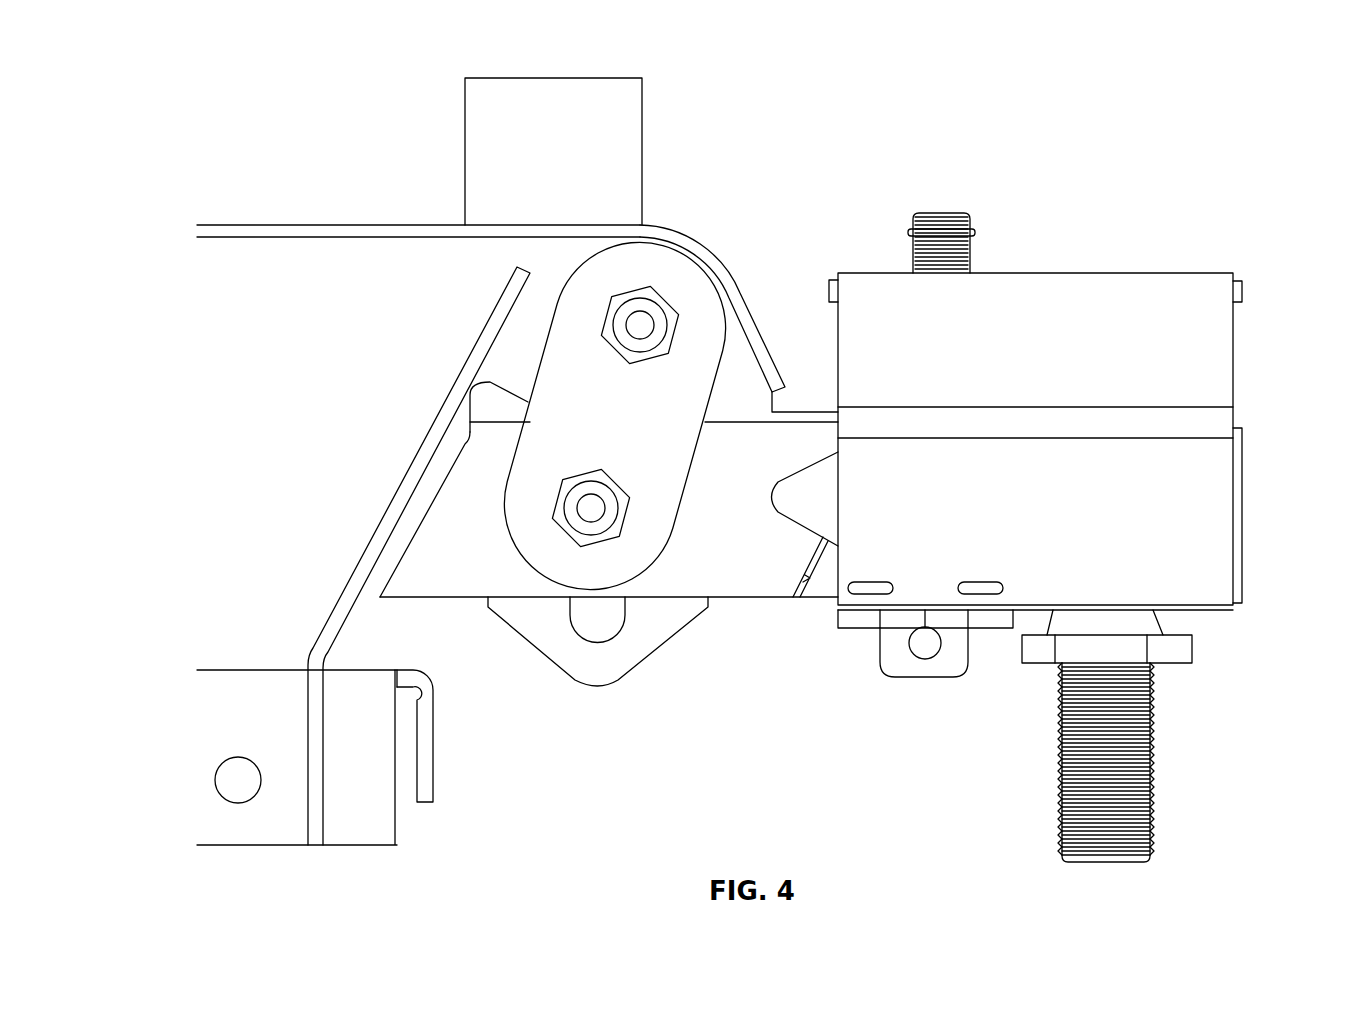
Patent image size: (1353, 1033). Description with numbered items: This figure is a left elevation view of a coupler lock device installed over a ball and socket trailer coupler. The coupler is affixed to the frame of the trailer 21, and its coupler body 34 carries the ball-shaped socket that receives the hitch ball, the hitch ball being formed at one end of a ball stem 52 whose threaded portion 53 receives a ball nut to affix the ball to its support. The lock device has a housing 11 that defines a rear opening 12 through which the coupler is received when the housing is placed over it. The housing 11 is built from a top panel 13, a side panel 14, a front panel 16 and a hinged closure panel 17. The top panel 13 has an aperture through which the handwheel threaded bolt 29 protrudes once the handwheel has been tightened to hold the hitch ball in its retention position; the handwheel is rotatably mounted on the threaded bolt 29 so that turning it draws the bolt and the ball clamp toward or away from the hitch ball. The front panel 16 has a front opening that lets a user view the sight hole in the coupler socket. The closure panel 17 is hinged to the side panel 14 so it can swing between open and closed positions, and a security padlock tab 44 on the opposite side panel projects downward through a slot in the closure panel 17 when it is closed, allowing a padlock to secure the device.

The housing 11 is at (1098, 300).
The rear opening 12 is at (838, 347).
The top panel 13 is at (867, 272).
The side panel 14 is at (1028, 336).
The front panel 16 is at (1242, 475).
The hinged closure panel 17 is at (860, 617).
The trailer 21 is at (263, 455).
The threaded bolt 29 is at (935, 212).
The coupler body 34 is at (475, 520).
The security padlock tab 44 is at (898, 662).
The ball stem 52 is at (1105, 622).
The threaded portion 53 is at (1150, 743).